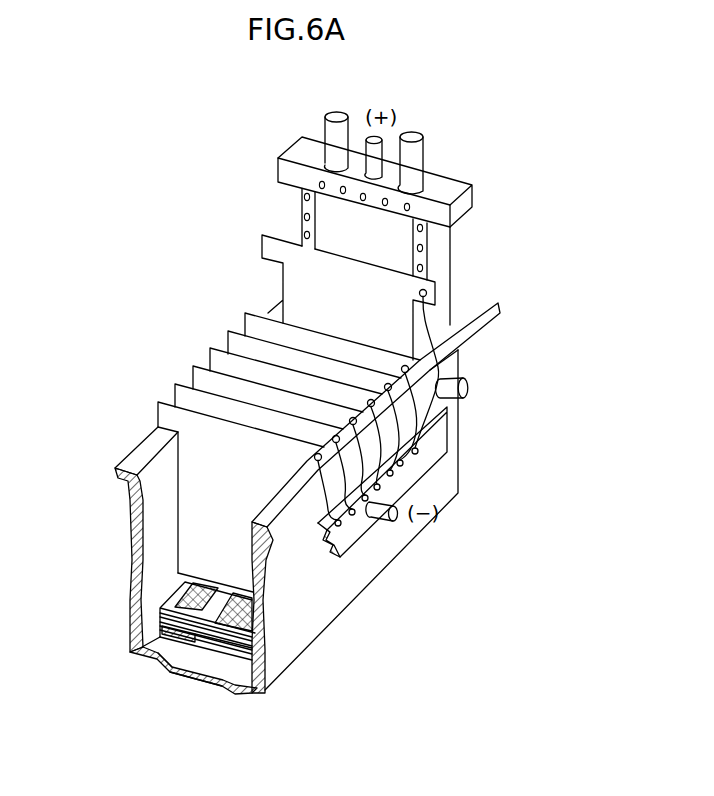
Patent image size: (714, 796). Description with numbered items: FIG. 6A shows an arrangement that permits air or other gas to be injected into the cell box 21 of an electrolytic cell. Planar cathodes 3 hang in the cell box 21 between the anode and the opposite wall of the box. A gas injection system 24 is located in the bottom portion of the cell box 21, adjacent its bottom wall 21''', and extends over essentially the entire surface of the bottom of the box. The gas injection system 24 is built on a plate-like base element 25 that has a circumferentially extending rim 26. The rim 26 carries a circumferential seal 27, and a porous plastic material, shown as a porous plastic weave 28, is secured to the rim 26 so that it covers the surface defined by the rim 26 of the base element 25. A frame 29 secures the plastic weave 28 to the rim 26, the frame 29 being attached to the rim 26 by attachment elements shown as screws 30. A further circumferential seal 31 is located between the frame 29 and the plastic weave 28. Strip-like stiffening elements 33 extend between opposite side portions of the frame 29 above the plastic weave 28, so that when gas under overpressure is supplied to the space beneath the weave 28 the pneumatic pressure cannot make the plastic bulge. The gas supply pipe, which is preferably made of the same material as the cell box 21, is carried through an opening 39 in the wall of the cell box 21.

The planar cathode 3 is at (172, 417).
The cell box 21 is at (339, 498).
The bottom wall 21''' is at (157, 704).
The gas injection system 24 is at (210, 645).
The base element 25 is at (190, 640).
The rim 26 is at (160, 663).
The circumferential seal 27 is at (158, 637).
The porous plastic weave 28 is at (157, 615).
The frame 29 is at (178, 575).
The screws 30 is at (215, 640).
The further circumferential seal 31 is at (178, 607).
The stiffening element 33 is at (203, 640).
The opening 39 is at (468, 388).